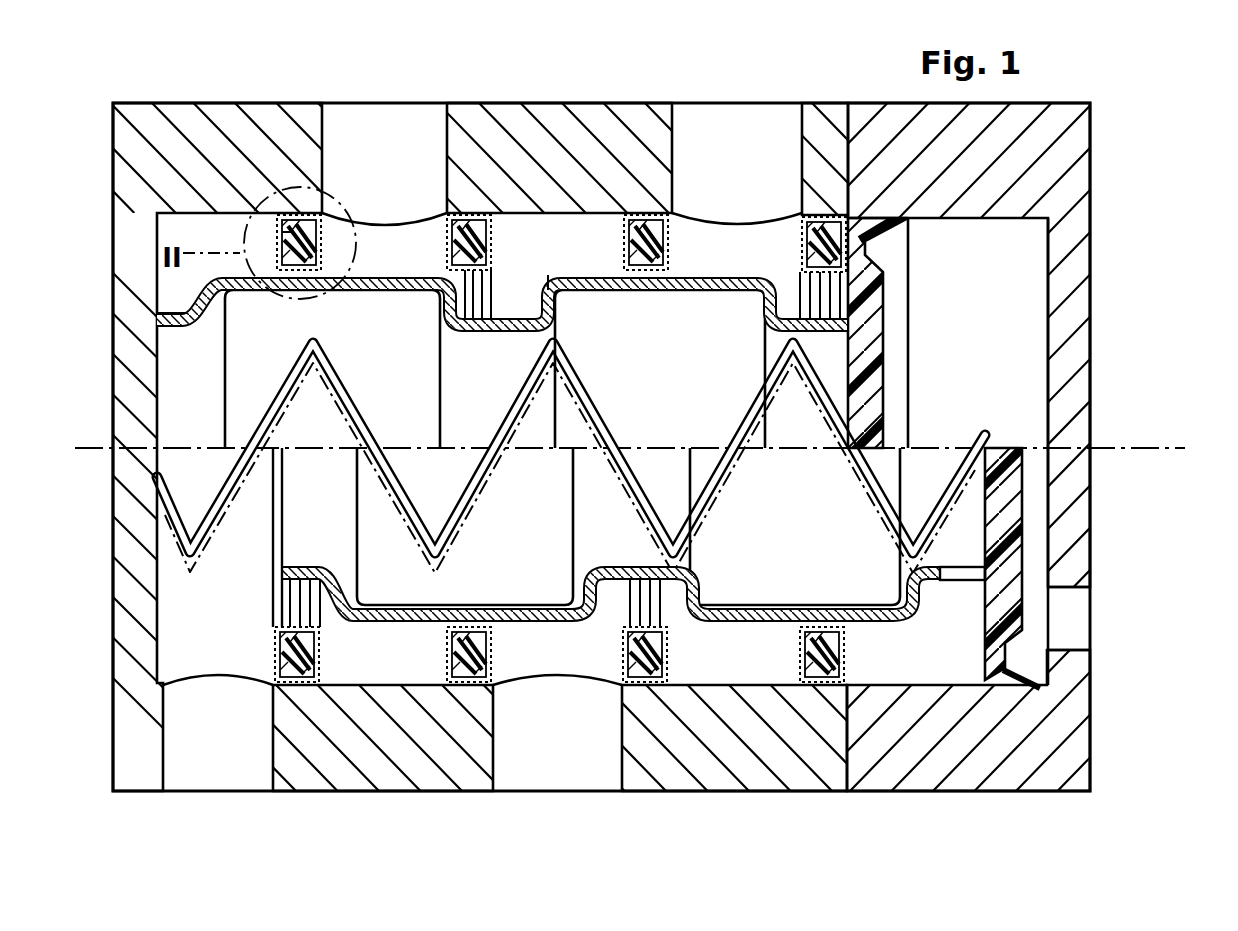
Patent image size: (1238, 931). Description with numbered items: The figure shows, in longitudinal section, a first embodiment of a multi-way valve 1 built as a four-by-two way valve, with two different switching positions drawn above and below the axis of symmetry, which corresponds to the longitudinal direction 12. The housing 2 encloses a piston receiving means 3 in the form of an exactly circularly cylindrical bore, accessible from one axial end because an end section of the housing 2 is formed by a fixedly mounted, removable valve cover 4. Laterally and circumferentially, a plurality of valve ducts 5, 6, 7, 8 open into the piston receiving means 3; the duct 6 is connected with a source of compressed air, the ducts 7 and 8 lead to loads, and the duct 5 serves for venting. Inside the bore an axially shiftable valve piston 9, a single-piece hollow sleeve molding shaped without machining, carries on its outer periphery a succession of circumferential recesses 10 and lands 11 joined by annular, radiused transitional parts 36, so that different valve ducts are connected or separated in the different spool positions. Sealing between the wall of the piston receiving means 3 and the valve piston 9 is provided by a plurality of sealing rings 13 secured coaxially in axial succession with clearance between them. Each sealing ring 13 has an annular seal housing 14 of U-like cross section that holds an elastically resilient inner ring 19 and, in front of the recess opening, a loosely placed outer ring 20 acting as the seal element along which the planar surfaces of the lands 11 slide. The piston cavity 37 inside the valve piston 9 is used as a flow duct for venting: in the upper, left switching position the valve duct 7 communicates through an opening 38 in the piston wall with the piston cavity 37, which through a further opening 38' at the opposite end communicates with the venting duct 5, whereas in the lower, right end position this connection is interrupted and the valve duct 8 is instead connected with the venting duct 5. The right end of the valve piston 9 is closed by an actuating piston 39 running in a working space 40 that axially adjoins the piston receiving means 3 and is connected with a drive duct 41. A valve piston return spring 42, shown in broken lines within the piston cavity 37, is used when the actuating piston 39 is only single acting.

The multi-way valve 1 is at (1115, 130).
The housing 2 is at (723, 770).
The piston receiving means 3 is at (388, 687).
The valve cover 4 is at (952, 762).
The valve duct 5 is at (220, 755).
The valve duct 6 is at (545, 750).
The valve duct 7 is at (723, 125).
The valve duct 8 is at (388, 122).
The valve piston 9 is at (750, 600).
The circumferential recess 10 is at (170, 305).
The land 11 is at (386, 272).
The longitudinal direction 12 is at (1140, 446).
The sealing ring 13 is at (297, 208).
The seal housing 14 is at (306, 208).
The inner ring 19 is at (282, 232).
The outer ring 20 is at (300, 290).
The transitional part 36 is at (552, 272).
The piston cavity 37 is at (607, 391).
The opening 38 is at (805, 351).
The opening 38' is at (178, 355).
The actuating piston 39 is at (876, 287).
The working space 40 is at (965, 371).
The drive duct 41 is at (1078, 628).
The valve piston return spring 42 is at (222, 515).